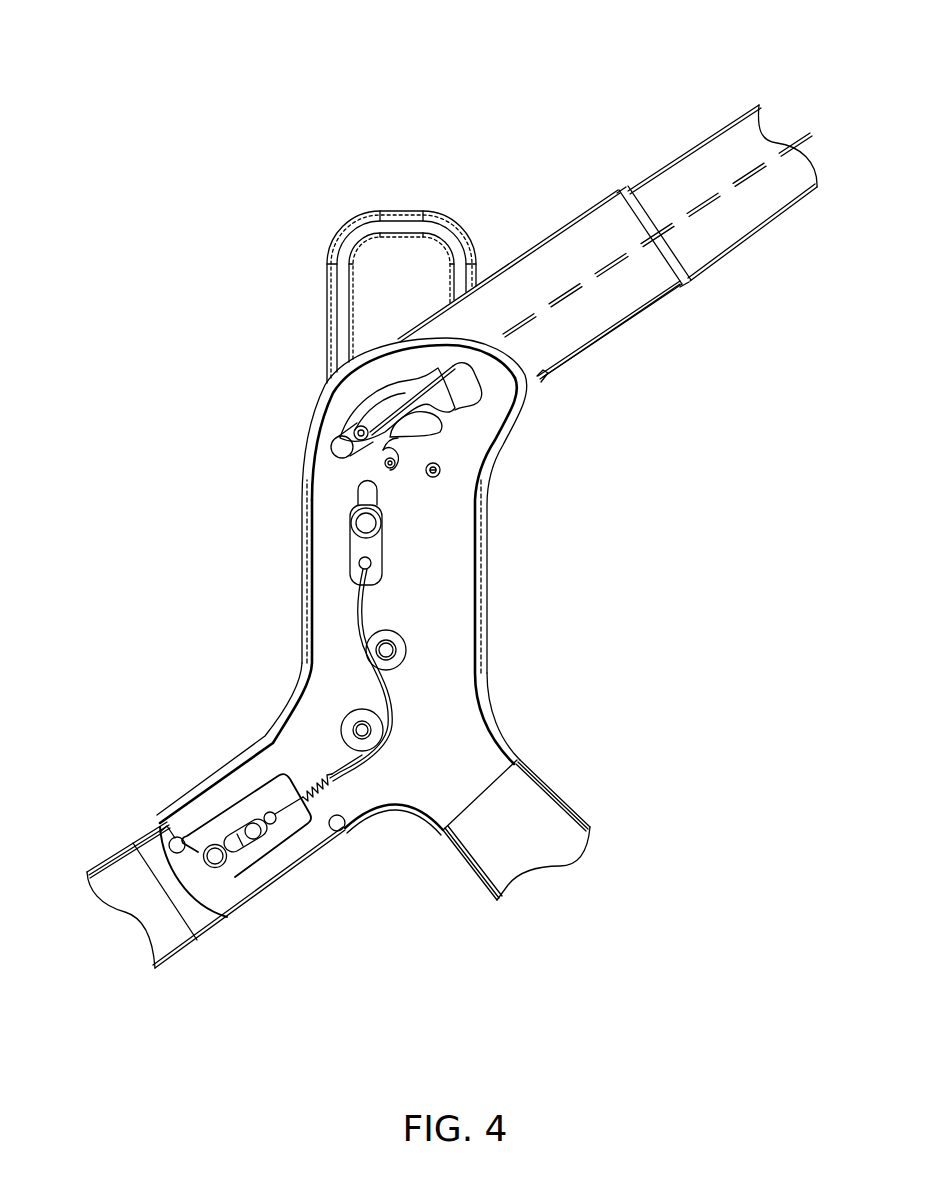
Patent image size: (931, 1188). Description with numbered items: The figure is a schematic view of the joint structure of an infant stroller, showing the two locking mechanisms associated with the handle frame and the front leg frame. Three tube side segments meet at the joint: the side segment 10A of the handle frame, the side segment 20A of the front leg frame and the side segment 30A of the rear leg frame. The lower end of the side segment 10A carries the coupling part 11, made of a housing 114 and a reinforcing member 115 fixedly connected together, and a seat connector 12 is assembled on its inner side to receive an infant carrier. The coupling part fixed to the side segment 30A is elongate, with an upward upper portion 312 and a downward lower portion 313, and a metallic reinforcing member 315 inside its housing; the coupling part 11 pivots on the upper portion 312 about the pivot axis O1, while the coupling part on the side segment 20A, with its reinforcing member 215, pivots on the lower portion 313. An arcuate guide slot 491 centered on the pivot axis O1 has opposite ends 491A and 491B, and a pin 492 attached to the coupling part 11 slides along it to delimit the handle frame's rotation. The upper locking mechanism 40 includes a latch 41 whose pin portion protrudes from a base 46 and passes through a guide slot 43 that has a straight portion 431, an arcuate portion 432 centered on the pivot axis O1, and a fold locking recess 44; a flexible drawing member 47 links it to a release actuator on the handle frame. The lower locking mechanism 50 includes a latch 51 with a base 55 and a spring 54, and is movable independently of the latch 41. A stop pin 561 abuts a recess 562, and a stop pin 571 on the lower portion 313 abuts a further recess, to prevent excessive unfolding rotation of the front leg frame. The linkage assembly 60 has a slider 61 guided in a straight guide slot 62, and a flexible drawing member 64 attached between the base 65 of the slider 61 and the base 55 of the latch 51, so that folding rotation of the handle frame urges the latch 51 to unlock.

The side segment 10A is at (607, 219).
The coupling part 11 is at (723, 328).
The housing 114 is at (557, 337).
The reinforcing member 115 is at (560, 376).
The flexible drawing member 47 is at (670, 228).
The seat connector 12 is at (403, 268).
The upper locking mechanism 40 is at (389, 659).
The upper portion 312 is at (372, 383).
The reinforcing member 315 is at (457, 680).
The lower portion 313 is at (247, 790).
The reinforcing member 215 is at (207, 893).
The spring 54 is at (383, 818).
The side segment 20A is at (148, 915).
The side segment 30A is at (540, 830).
The fold locking recess 44 is at (445, 367).
The guide slot 43 is at (210, 363).
The arcuate portion 432 is at (378, 404).
The straight portion 431 is at (351, 433).
The latch 41 is at (331, 449).
The end of guide slot 491B is at (440, 424).
The base 46 is at (394, 439).
The arcuate guide slot 491 is at (385, 465).
The pin 492 is at (382, 452).
The end of guide slot 491A is at (405, 473).
The pivot axis O1 is at (440, 471).
The linkage assembly 60 is at (409, 638).
The slider 61 is at (352, 527).
The guide slot 62 is at (373, 495).
The base 65 is at (362, 563).
The flexible drawing member 64 is at (387, 697).
The lower locking mechanism 50 is at (222, 808).
The base 55 is at (275, 792).
The latch 51 is at (208, 842).
The recess 562 is at (171, 839).
The stop pin 561 is at (162, 832).
The stop pin 571 is at (340, 830).